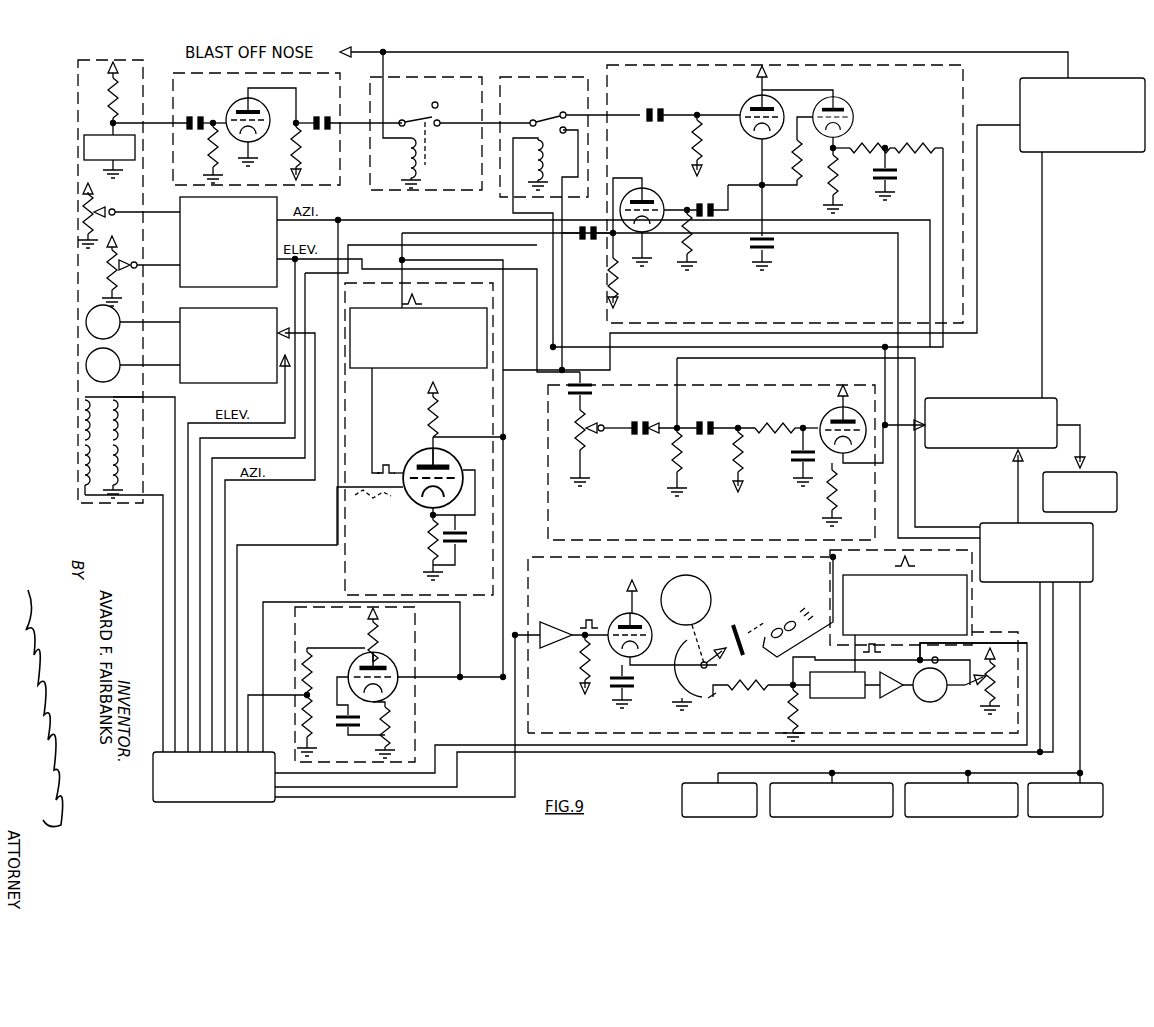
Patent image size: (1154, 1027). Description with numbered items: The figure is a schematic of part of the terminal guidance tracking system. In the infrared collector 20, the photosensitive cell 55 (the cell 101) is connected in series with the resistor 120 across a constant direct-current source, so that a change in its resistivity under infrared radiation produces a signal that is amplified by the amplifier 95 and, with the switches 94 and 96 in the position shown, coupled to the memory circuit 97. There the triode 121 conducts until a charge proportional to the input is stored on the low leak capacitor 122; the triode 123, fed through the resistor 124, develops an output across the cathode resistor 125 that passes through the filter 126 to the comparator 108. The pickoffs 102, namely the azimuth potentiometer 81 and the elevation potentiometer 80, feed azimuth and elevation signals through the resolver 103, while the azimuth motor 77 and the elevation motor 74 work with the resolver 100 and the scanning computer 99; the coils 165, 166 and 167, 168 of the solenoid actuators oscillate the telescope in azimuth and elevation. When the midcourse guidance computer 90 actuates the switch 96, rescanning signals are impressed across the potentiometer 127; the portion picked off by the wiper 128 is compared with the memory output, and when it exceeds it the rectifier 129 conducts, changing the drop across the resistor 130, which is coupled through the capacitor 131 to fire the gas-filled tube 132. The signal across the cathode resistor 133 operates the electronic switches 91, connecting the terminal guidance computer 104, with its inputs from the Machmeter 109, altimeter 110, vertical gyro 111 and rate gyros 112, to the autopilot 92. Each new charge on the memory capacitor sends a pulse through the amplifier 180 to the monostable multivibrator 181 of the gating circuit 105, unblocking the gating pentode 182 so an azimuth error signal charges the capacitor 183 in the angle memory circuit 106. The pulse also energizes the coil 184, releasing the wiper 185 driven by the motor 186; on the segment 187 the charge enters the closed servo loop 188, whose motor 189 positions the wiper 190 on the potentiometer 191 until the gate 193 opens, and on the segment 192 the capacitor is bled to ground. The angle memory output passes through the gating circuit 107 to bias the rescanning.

The infrared collector 20 is at (116, 70).
The resistor 120 is at (108, 102).
The photosensitive cell 101 is at (135, 114).
The photosensitive cell 55 is at (136, 146).
The azimuth potentiometer 81 is at (106, 206).
The pickoffs 102 is at (116, 229).
The elevation potentiometer 80 is at (134, 256).
The azimuth motor 77 is at (112, 312).
The elevation motor 74 is at (114, 355).
The azimuth solenoid coil 165 is at (83, 415).
The azimuth solenoid coil 166 is at (83, 470).
The elevation solenoid coil 167 is at (124, 414).
The elevation solenoid coil 168 is at (128, 462).
The resolver 103 is at (272, 212).
The resolver 100 is at (205, 315).
The amplifier 95 is at (190, 86).
The switch 94 is at (414, 84).
The switch 96 is at (524, 84).
The memory circuit 97 is at (954, 90).
The triode 121 is at (750, 110).
The triode 123 is at (850, 110).
The resistor 124 is at (765, 162).
The cathode resistor 125 is at (838, 192).
The filter 126 is at (887, 146).
The low leak capacitor 122 is at (770, 250).
The amplifier 180 is at (645, 250).
The midcourse guidance computer 90 is at (1108, 142).
The gating circuit 105 is at (362, 300).
The monostable multivibrator 181 is at (478, 312).
The gating pentode 182 is at (425, 452).
The gating circuit 107 is at (322, 618).
The scanning computer 99 is at (164, 760).
The comparator 108 is at (880, 520).
The potentiometer 127 is at (585, 420).
The wiper 128 is at (602, 432).
The rectifier 129 is at (650, 436).
The resistor 130 is at (685, 452).
The capacitor 131 is at (712, 420).
The gas-filled tube 132 is at (840, 435).
The cathode resistor 133 is at (828, 500).
The electronic switches 91 is at (1047, 409).
The autopilot 92 is at (1105, 478).
The terminal guidance computer 104 is at (1093, 561).
The angle memory circuit 106 is at (937, 560).
The segment 192 is at (700, 692).
The capacitor 183 is at (636, 682).
The motor 186 is at (708, 580).
The wiper 185 is at (714, 656).
The coil 184 is at (782, 608).
The segment 187 is at (730, 690).
The gate 193 is at (814, 702).
The closed servo loop 188 is at (888, 639).
The motor 189 is at (922, 703).
The wiper 190 is at (982, 698).
The potentiometer 191 is at (995, 678).
The Machmeter 109 is at (685, 790).
The altimeter 110 is at (875, 790).
The vertical gyro 111 is at (916, 790).
The rate gyros 112 is at (1093, 790).